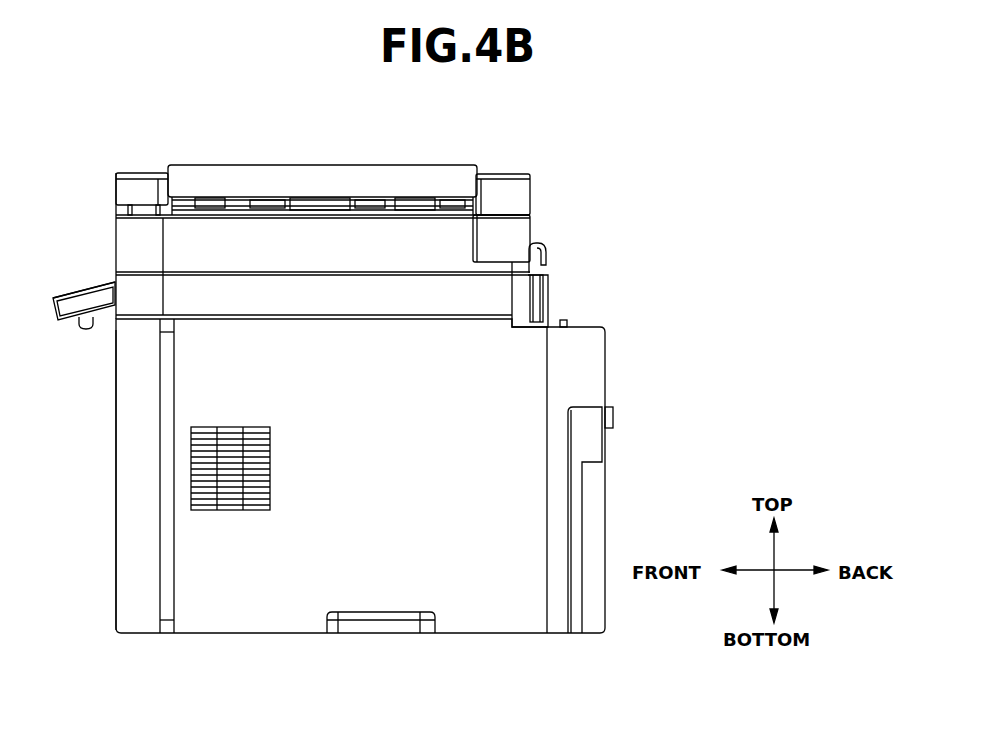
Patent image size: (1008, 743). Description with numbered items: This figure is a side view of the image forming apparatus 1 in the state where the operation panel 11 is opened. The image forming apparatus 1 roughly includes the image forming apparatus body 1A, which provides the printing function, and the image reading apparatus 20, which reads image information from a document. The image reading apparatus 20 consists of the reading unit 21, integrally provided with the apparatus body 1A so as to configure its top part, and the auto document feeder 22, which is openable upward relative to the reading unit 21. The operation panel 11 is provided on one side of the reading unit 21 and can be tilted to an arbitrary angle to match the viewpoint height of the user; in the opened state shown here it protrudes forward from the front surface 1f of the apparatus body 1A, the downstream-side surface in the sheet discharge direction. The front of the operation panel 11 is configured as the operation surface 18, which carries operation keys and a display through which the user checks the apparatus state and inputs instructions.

The image forming apparatus 1 is at (395, 147).
The image forming apparatus body 1A is at (621, 356).
The front surface 1f is at (116, 447).
The operation panel 11 is at (48, 276).
The operation surface 18 is at (88, 282).
The image reading apparatus 20 is at (135, 167).
The reading unit 21 is at (549, 290).
The auto document feeder 22 is at (526, 197).